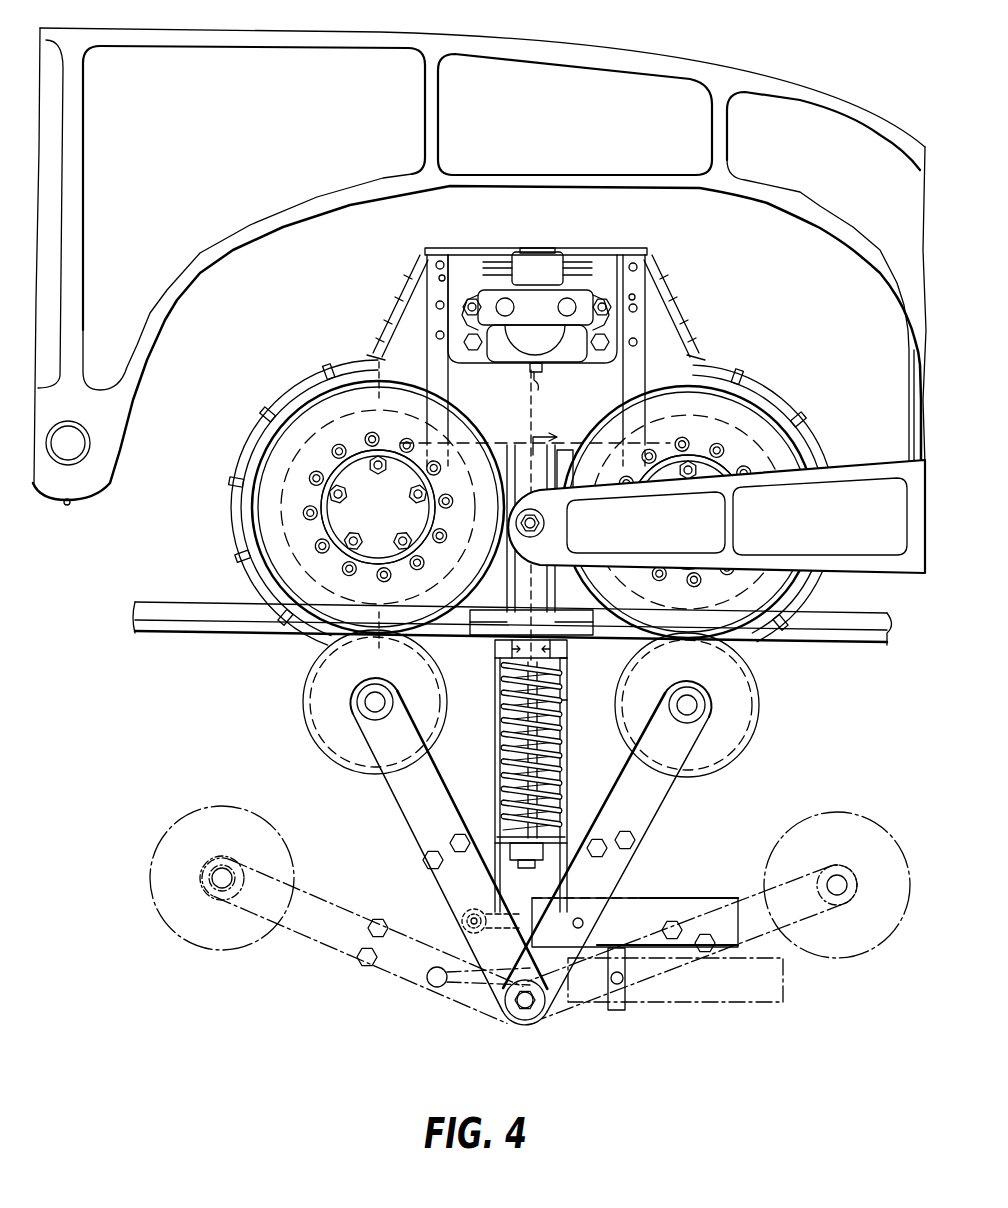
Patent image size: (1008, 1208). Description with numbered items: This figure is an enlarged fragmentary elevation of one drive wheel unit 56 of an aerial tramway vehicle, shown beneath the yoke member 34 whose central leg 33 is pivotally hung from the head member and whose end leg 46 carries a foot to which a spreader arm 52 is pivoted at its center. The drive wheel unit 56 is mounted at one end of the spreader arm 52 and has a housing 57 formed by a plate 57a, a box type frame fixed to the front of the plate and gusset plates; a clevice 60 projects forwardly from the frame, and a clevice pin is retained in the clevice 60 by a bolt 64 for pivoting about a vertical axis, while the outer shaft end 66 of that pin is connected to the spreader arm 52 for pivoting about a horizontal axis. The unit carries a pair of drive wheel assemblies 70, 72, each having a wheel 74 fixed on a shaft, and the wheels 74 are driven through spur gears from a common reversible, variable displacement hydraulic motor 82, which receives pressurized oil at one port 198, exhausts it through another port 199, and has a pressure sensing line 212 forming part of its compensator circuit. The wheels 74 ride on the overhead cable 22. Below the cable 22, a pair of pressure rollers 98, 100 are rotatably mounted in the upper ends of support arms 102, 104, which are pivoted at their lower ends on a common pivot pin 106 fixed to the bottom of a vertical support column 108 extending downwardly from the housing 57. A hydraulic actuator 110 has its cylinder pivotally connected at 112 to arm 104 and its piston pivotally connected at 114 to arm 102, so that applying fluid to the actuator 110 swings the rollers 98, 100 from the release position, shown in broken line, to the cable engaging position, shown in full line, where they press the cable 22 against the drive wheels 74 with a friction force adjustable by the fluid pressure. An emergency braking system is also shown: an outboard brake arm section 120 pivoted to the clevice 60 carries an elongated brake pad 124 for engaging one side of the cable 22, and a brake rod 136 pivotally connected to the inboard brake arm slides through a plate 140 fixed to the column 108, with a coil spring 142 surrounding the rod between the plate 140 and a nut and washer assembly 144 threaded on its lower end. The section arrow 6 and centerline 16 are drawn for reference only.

The yoke member 34 is at (607, 50).
The central leg 33 is at (125, 400).
The end leg 46 is at (908, 413).
The drive wheel unit 56 is at (752, 292).
The housing 57 is at (408, 305).
The plate 57a is at (660, 312).
The hydraulic motor 82 is at (545, 262).
The port 198 is at (505, 298).
The port 199 is at (567, 298).
The pressure sensing line 212 is at (548, 387).
The drive wheel assembly 70 is at (461, 396).
The drive wheel assembly 72 is at (610, 394).
The wheel 74 is at (325, 420).
The wheel centerline 16 is at (370, 369).
The clevice 60 is at (517, 442).
The section arrow 6 is at (542, 434).
The bolt 64 is at (572, 478).
The outboard brake arm section 120 is at (497, 605).
The spreader arm 52 is at (873, 470).
The outer shaft end 66 is at (545, 520).
The cable 22 is at (190, 602).
The pressure roller 98 is at (305, 690).
The pressure roller 100 is at (760, 696).
The brake pad 124 is at (495, 658).
The vertical support column 108 is at (567, 772).
The plate 140 is at (567, 675).
The coil spring 142 is at (507, 753).
The brake rod 136 is at (557, 803).
The nut and washer assembly 144 is at (540, 862).
The support arm 102 is at (400, 812).
The support arm 104 is at (650, 822).
The pivot pin 106 is at (540, 1014).
The hydraulic actuator 110 is at (693, 900).
The pivotal connection 112 is at (580, 918).
The pivotal connection 114 is at (465, 915).